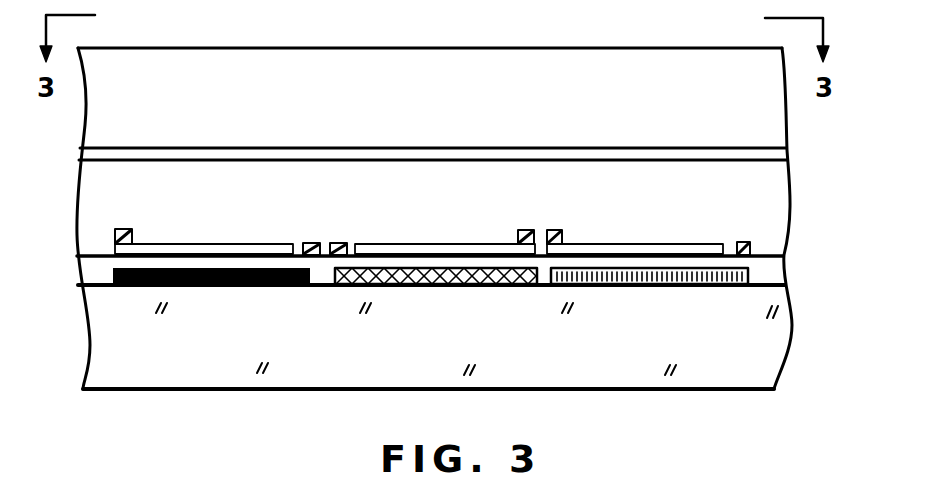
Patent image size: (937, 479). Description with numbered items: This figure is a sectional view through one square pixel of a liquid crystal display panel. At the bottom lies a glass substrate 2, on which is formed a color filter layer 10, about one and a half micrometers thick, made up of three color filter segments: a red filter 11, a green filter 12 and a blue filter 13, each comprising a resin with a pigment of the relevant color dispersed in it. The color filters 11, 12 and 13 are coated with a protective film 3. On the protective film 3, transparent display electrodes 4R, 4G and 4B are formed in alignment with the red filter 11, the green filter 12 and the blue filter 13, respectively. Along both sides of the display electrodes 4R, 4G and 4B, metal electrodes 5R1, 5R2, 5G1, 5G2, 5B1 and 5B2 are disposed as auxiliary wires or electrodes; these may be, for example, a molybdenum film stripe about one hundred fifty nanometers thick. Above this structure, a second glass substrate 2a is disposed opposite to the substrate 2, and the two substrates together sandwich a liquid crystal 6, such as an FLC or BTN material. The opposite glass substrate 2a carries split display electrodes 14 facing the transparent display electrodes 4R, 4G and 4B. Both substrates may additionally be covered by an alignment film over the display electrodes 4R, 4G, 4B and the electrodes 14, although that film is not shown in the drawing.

The glass substrate 2 is at (768, 357).
The glass substrate 2a is at (763, 113).
The protective film 3 is at (773, 272).
The transparent display electrode 4R is at (208, 244).
The transparent display electrode 4G is at (432, 244).
The transparent display electrode 4B is at (650, 244).
The metal electrode 5R1 is at (125, 229).
The metal electrode 5R2 is at (308, 243).
The metal electrode 5G1 is at (340, 243).
The metal electrode 5G2 is at (527, 230).
The metal electrode 5B1 is at (553, 230).
The metal electrode 5B2 is at (742, 242).
The liquid crystal 6 is at (777, 190).
The color filter layer 10 is at (806, 298).
The red filter 11 is at (207, 288).
The green filter 12 is at (440, 288).
The blue filter 13 is at (657, 288).
The split display electrodes 14 is at (412, 148).